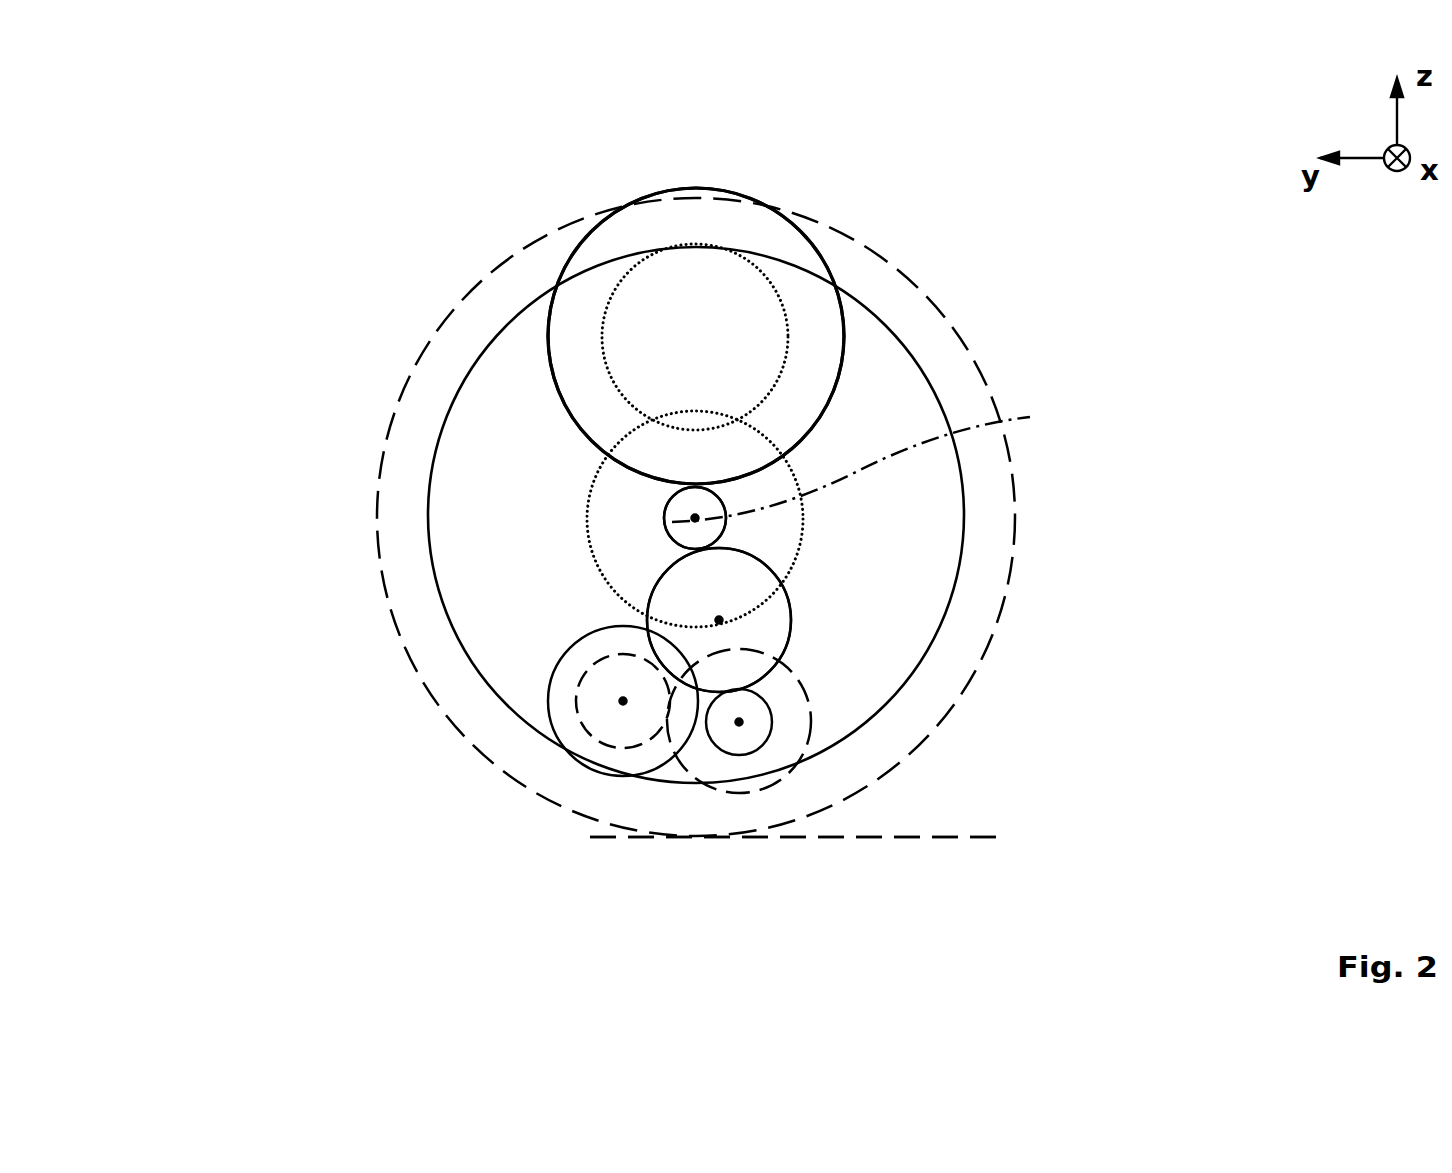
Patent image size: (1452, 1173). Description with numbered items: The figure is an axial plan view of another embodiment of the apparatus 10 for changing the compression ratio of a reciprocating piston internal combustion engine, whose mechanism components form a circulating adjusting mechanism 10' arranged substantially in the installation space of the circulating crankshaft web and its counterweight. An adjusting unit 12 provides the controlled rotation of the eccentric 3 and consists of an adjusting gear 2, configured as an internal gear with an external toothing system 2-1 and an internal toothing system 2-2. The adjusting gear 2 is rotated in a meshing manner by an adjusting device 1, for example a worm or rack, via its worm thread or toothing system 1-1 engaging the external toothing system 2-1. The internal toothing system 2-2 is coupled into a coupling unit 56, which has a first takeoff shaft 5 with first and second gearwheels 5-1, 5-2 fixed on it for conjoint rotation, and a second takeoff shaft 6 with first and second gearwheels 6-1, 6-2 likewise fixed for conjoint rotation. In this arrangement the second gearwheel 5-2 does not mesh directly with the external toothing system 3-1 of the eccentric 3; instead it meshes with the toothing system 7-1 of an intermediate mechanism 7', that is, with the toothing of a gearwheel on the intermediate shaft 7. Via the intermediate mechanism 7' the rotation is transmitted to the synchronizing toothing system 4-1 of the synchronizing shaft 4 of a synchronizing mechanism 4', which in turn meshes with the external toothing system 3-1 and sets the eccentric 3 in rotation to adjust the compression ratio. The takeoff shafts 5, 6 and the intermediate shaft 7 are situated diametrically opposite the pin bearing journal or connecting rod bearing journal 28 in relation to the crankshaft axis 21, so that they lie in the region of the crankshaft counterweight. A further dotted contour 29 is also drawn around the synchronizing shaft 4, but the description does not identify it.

The apparatus for changing a compression ratio 10 is at (690, 502).
The circulating adjusting mechanism 10' is at (690, 502).
The adjusting unit 12 is at (301, 643).
The adjusting gear 2 is at (445, 680).
The external toothing system 2-1 is at (463, 742).
The internal toothing system 2-2 is at (457, 633).
The adjusting device 1 is at (923, 850).
The worm thread or toothing system 1-1 is at (892, 837).
The eccentric 3 is at (570, 342).
The external toothing system 3-1 is at (547, 317).
The pin bearing journal or connecting rod bearing journal 28 is at (618, 278).
The dotted contour around roller 4 29 is at (587, 557).
The crankshaft axis 21 is at (870, 461).
The synchronizing mechanism 4' is at (479, 490).
The synchronizing shaft 4 is at (509, 490).
The synchronizing toothing system 4-1 is at (667, 507).
The coupling unit 56 is at (1127, 500).
The intermediate mechanism 7' is at (904, 596).
The intermediate shaft 7 is at (874, 596).
The toothing system 7-1 is at (790, 607).
The first takeoff shaft 5 is at (752, 723).
The first gearwheel 5-1 is at (797, 680).
The second gearwheel 5-2 is at (763, 747).
The second takeoff shaft 6 is at (600, 725).
The first gearwheel 6-1 is at (630, 748).
The second gearwheel 6-2 is at (545, 718).